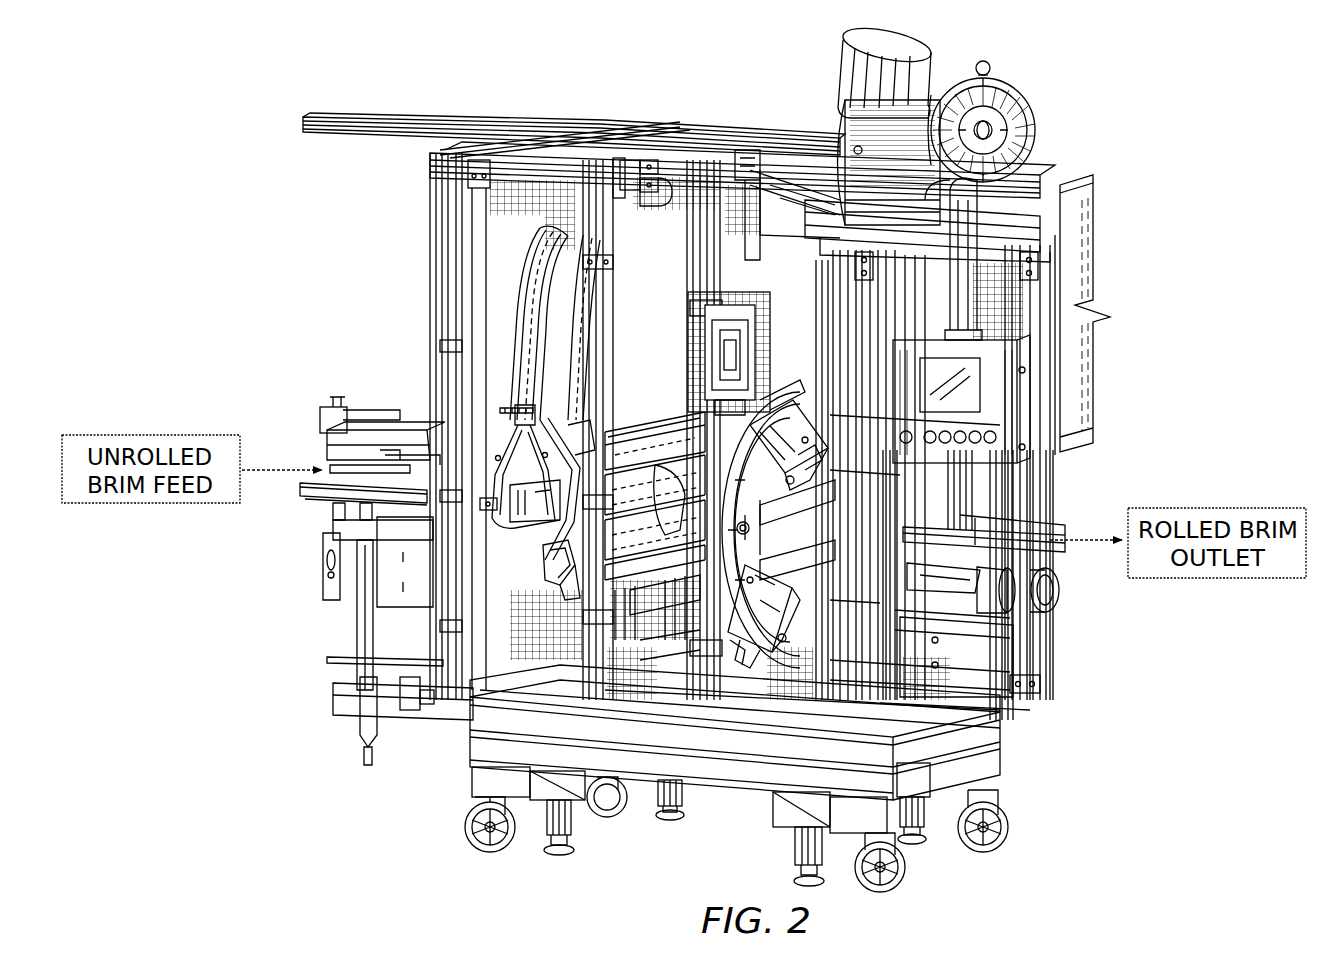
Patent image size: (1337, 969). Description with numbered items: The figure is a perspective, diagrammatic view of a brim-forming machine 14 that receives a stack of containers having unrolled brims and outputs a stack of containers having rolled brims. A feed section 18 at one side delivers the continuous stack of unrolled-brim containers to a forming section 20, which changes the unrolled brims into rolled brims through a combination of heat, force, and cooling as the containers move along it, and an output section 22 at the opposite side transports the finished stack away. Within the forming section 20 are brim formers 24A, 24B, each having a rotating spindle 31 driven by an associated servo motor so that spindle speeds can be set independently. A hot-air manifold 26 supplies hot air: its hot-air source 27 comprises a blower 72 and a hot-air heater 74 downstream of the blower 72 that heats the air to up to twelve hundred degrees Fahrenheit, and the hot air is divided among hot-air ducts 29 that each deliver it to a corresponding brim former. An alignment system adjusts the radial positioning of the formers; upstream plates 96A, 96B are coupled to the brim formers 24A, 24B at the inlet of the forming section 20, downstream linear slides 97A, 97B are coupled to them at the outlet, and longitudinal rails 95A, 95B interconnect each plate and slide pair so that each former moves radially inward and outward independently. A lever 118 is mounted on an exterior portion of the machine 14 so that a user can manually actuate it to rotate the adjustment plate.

The brim-forming machine 14 is at (1102, 170).
The feed section 18 is at (358, 388).
The forming section 20 is at (657, 222).
The output section 22 is at (1070, 525).
The brim former 24A is at (640, 485).
The brim former 24B is at (632, 530).
The hot-air manifold 26 is at (505, 300).
The hot-air source 27 is at (938, 46).
The hot-air duct 29 is at (518, 255).
The rotating spindle 31 is at (668, 594).
The blower 72 is at (1012, 56).
The hot-air heater 74 is at (690, 170).
The longitudinal rail 95A is at (670, 440).
The longitudinal rail 95B is at (700, 500).
The upstream plate 96A is at (555, 435).
The upstream plate 96B is at (545, 565).
The downstream linear slide 97A is at (785, 435).
The downstream linear slide 97B is at (762, 654).
The lever 118 is at (750, 187).